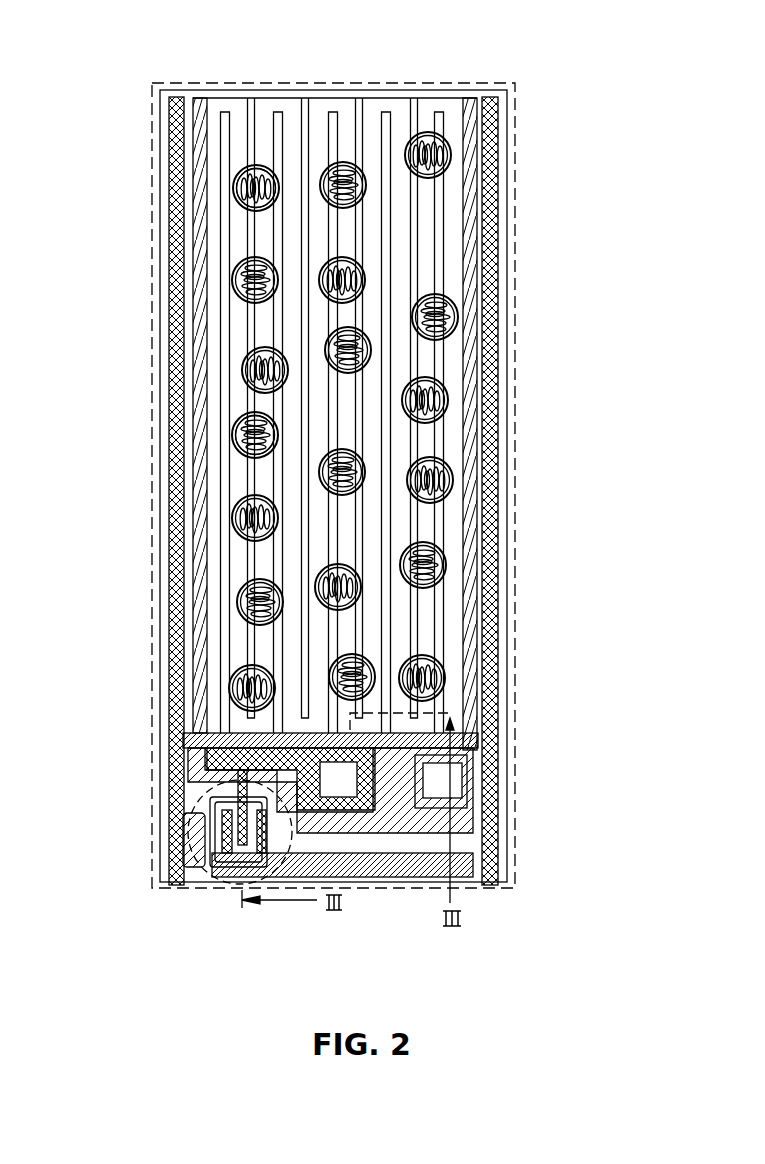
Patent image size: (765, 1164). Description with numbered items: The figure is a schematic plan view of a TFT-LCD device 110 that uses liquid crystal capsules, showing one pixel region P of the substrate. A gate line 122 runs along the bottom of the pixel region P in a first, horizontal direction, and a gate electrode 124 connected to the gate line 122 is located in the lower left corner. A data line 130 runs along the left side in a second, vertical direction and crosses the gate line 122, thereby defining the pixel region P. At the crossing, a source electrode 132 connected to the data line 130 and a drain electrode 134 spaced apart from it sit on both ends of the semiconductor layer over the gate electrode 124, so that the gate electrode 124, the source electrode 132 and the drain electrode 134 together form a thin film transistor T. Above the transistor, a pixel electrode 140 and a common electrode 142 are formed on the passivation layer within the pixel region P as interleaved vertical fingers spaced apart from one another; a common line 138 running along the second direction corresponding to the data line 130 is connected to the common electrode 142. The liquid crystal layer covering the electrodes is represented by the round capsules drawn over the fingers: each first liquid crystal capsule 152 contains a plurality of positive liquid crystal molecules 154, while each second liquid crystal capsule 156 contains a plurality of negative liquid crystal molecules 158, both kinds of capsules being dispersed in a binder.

The TFT-LCD device 110 is at (345, 38).
The pixel region P is at (515, 442).
The gate line 122 is at (400, 878).
The gate electrode 124 is at (208, 800).
The data line 130 is at (168, 670).
The source electrode 132 is at (228, 860).
The drain electrode 134 is at (266, 860).
The common line 138 is at (500, 566).
The pixel electrode 140 is at (418, 605).
The common electrode 142 is at (443, 637).
The first liquid crystal capsule 152 is at (234, 445).
The positive liquid crystal molecules 154 is at (234, 426).
The second liquid crystal capsule 156 is at (236, 192).
The negative liquid crystal molecules 158 is at (236, 175).
The thin film transistor T is at (170, 840).